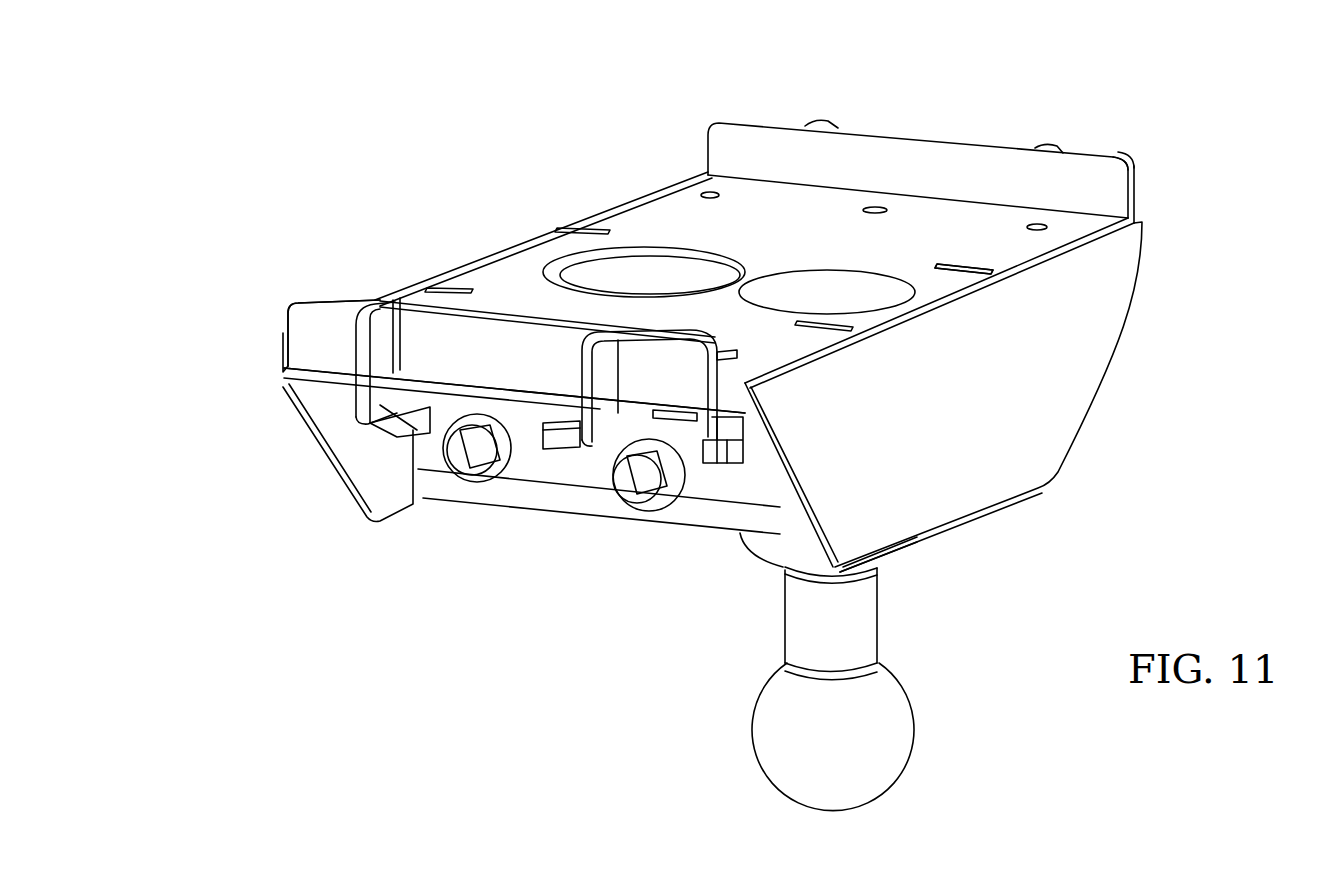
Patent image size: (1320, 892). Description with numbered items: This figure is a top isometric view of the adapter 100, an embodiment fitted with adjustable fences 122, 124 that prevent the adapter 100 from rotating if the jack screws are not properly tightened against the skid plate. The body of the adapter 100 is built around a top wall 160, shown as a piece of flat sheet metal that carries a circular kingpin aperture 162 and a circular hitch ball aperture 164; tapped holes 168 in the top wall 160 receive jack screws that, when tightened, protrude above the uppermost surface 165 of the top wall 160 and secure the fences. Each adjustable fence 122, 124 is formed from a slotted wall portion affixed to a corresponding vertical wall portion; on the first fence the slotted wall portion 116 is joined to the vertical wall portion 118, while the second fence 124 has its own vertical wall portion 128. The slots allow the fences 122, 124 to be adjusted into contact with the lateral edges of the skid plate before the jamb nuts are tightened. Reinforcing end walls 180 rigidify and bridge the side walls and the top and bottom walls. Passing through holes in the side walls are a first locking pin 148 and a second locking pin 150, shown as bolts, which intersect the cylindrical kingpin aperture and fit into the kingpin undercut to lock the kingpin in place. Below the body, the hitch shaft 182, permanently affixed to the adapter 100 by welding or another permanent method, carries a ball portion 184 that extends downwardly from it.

The adapter 100 is at (400, 146).
The slotted wall portion 116 is at (330, 390).
The vertical wall portion 118 is at (323, 333).
The adjustable fence 122 is at (286, 260).
The adjustable fence 124 is at (975, 104).
The vertical wall portion 128 is at (1108, 180).
The first locking pin 148 is at (637, 483).
The second locking pin 150 is at (470, 455).
The top wall 160 is at (650, 220).
The kingpin aperture 162 is at (617, 280).
The hitch ball aperture 164 is at (867, 275).
The uppermost surface 165 is at (737, 247).
The tapped holes 168 is at (705, 193).
The reinforcing end walls 180 is at (359, 457).
The hitch shaft 182 is at (892, 574).
The ball portion 184 is at (800, 758).